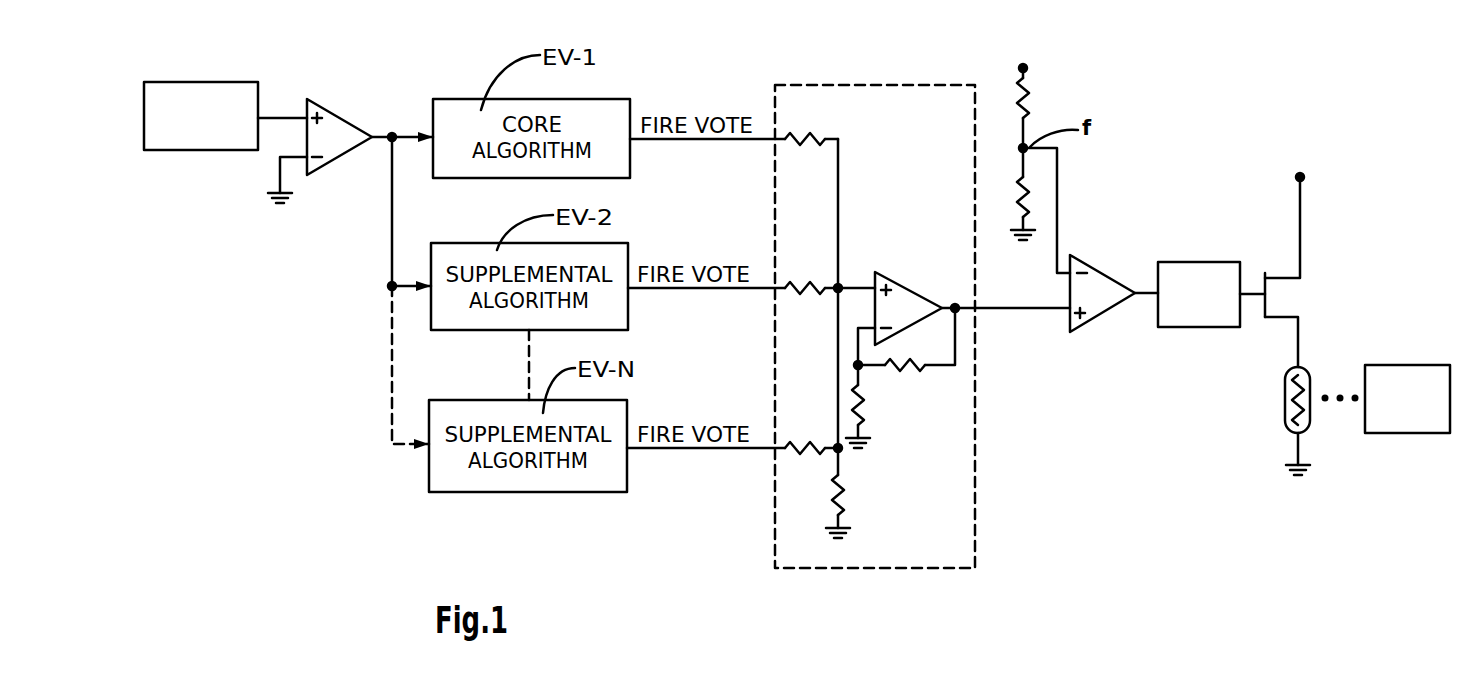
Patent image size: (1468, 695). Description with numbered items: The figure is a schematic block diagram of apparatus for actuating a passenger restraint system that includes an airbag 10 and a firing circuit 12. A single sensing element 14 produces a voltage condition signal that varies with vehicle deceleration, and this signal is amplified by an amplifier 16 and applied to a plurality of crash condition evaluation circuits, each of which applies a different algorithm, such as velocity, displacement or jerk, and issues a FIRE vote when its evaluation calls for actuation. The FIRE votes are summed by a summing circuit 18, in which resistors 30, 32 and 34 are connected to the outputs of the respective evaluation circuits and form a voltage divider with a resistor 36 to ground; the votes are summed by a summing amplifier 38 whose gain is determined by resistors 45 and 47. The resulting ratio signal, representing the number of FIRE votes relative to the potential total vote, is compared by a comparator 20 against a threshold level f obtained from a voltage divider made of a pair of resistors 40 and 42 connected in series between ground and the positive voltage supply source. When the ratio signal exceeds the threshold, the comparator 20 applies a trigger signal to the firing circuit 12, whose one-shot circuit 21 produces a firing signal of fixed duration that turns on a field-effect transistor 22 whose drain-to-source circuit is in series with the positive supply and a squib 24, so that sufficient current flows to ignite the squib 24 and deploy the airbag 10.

The airbag 10 is at (1407, 367).
The firing circuit 12 is at (1220, 207).
The sensing element 14 is at (202, 86).
The amplifier 16 is at (333, 120).
The summing circuit 18 is at (870, 85).
The comparator 20 is at (1098, 312).
The one-shot circuit 21 is at (1200, 262).
The field-effect transistor 22 is at (1291, 295).
The squib 24 is at (1286, 402).
The resistor 30 is at (800, 134).
The resistor 32 is at (801, 283).
The resistor 34 is at (805, 446).
The resistor 36 is at (845, 507).
The summing amplifier 38 is at (898, 290).
The resistor 40 is at (1016, 198).
The resistor 42 is at (1017, 108).
The resistor 45 is at (905, 370).
The resistor 47 is at (864, 410).